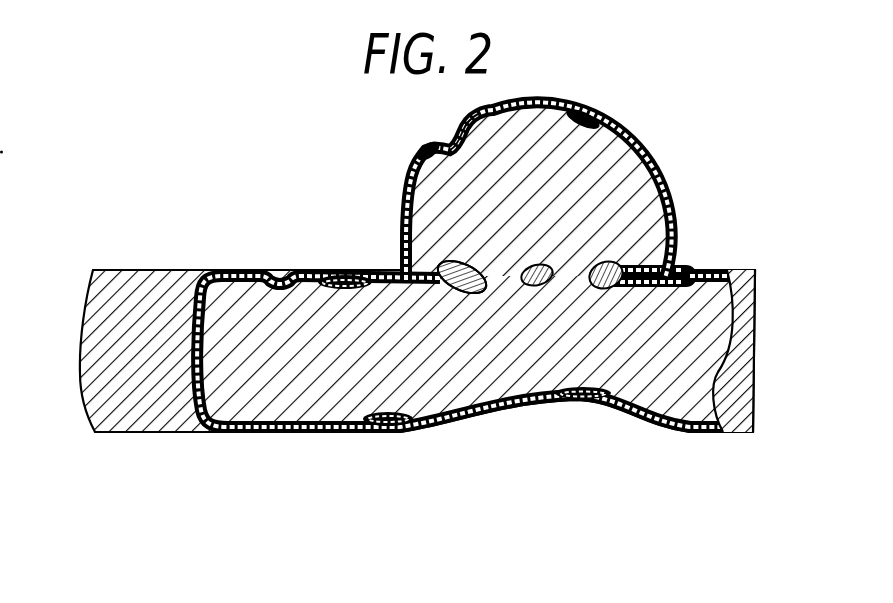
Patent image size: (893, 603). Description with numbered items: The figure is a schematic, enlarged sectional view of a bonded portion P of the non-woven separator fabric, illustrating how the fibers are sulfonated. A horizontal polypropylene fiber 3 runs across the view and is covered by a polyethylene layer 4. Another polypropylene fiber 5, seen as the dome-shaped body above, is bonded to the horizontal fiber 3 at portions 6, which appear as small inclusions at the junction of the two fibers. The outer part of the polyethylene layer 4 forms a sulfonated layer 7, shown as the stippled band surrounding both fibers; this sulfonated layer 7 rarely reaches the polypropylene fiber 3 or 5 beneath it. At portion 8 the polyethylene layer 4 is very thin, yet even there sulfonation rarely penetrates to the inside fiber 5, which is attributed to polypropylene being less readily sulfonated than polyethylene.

The polypropylene fiber 3 is at (325, 405).
The polyethylene layer 4 is at (472, 292).
The polypropylene fiber 5 is at (600, 177).
The bonding portions 6 is at (524, 290).
The sulfonated layer 7 is at (597, 108).
The thin polyethylene portion 8 is at (458, 136).
The bonded portion P is at (736, 184).